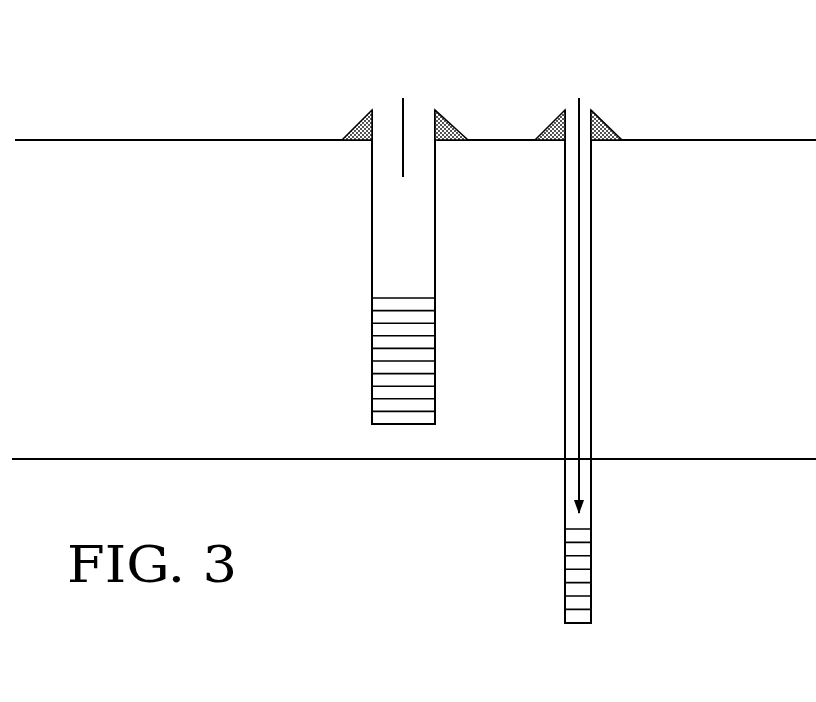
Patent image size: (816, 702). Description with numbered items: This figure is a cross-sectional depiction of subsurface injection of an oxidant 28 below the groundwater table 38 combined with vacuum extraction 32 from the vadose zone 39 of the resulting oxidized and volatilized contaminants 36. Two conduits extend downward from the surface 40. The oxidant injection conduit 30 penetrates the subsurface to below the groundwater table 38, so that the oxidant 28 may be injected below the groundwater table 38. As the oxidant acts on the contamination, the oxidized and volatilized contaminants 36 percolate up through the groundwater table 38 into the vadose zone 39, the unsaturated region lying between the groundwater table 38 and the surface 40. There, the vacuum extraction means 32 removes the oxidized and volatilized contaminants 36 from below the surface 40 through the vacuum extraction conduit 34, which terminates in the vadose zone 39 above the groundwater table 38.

The oxidant 28 is at (579, 98).
The oxidant injection conduit 30 is at (595, 263).
The vacuum extraction means 32 is at (403, 98).
The vacuum extraction conduit 34 is at (368, 222).
The oxidized and volatilized contaminants 36 is at (363, 397).
The groundwater table 38 is at (93, 457).
The vadose zone 39 is at (103, 298).
The surface 40 is at (107, 137).